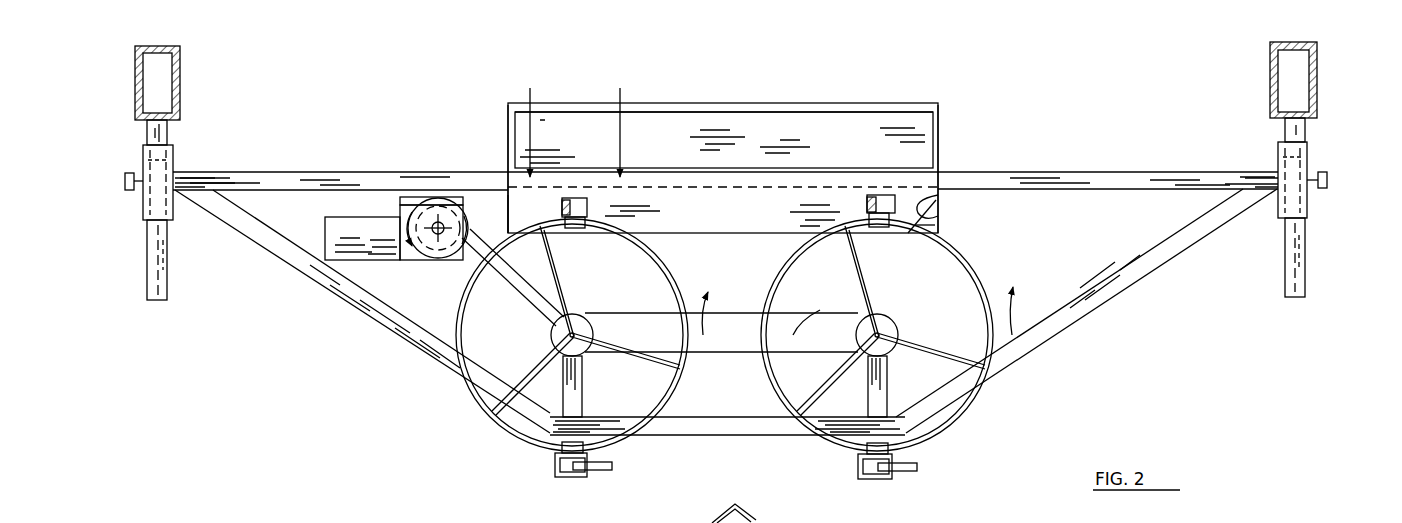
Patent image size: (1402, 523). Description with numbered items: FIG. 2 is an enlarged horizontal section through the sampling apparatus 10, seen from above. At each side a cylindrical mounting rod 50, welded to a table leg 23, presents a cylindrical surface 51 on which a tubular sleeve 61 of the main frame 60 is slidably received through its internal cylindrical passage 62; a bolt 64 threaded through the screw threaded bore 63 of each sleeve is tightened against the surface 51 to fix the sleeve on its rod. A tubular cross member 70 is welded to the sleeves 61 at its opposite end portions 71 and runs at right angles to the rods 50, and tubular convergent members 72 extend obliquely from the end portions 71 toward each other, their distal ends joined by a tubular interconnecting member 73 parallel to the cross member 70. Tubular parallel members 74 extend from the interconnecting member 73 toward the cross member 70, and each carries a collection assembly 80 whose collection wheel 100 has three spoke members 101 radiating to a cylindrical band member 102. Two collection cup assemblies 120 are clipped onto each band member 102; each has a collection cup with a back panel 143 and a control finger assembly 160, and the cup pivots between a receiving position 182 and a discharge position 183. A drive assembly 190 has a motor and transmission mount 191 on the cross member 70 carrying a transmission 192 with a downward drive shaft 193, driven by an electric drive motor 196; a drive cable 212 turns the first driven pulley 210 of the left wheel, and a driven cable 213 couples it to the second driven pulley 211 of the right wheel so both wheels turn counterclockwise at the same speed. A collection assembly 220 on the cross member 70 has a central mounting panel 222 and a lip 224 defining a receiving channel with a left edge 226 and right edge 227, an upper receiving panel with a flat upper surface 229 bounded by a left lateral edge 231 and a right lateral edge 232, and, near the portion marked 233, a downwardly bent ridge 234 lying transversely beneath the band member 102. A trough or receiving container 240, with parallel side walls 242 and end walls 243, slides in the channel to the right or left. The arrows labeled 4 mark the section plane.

The section line 4 is at (572, 121).
The sampling apparatus 10 is at (415, 353).
The table legs 23 is at (182, 78).
The cylindrical mounting rods 50 is at (150, 270).
The cylindrical surfaces 51 is at (155, 233).
The main frame 60 is at (300, 284).
The tubular sleeves 61 is at (143, 197).
The internal cylindrical passages 62 is at (150, 163).
The screw threaded bore 63 is at (138, 172).
The bolt 64 is at (125, 180).
The tubular cross member 70 is at (1015, 172).
The opposite end portions 71 is at (182, 184).
The tubular convergent members 72 is at (353, 310).
The tubular interconnecting member 73 is at (746, 437).
The tubular parallel members 74 is at (561, 398).
The collection assembly 80 is at (455, 398).
The collection wheel 100 is at (530, 446).
The spoke members 101 is at (557, 268).
The cylindrical band member 102 is at (665, 262).
The collection cup assembly 120 is at (570, 195).
The back panel 143 is at (720, 513).
The control finger assembly 160 is at (612, 466).
The receiving position 182 is at (553, 479).
The discharge position 183 is at (600, 208).
The drive assembly 190 is at (442, 298).
The motor and transmission mount 191 is at (410, 203).
The transmission 192 is at (421, 250).
The drive shaft 193 is at (438, 215).
The electric drive motor 196 is at (365, 236).
The first driven pulley 210 is at (580, 318).
The second driven pulley 211 is at (886, 318).
The drive cable 212 is at (516, 327).
The driven cable 213 is at (793, 312).
The collection assembly 220 is at (950, 106).
The central mounting panel 222 is at (780, 170).
The lip 224 is at (700, 100).
The left edge 226 is at (506, 110).
The right edge 227 is at (946, 103).
The flat upper surface 229 is at (782, 216).
The left lateral edge 231 is at (508, 208).
The right lateral edge 232 is at (940, 219).
The latch pin 233 is at (945, 232).
The ridge 234 is at (940, 206).
The receiving container 240 is at (831, 103).
The side walls 242 is at (655, 168).
The end walls 243 is at (506, 138).